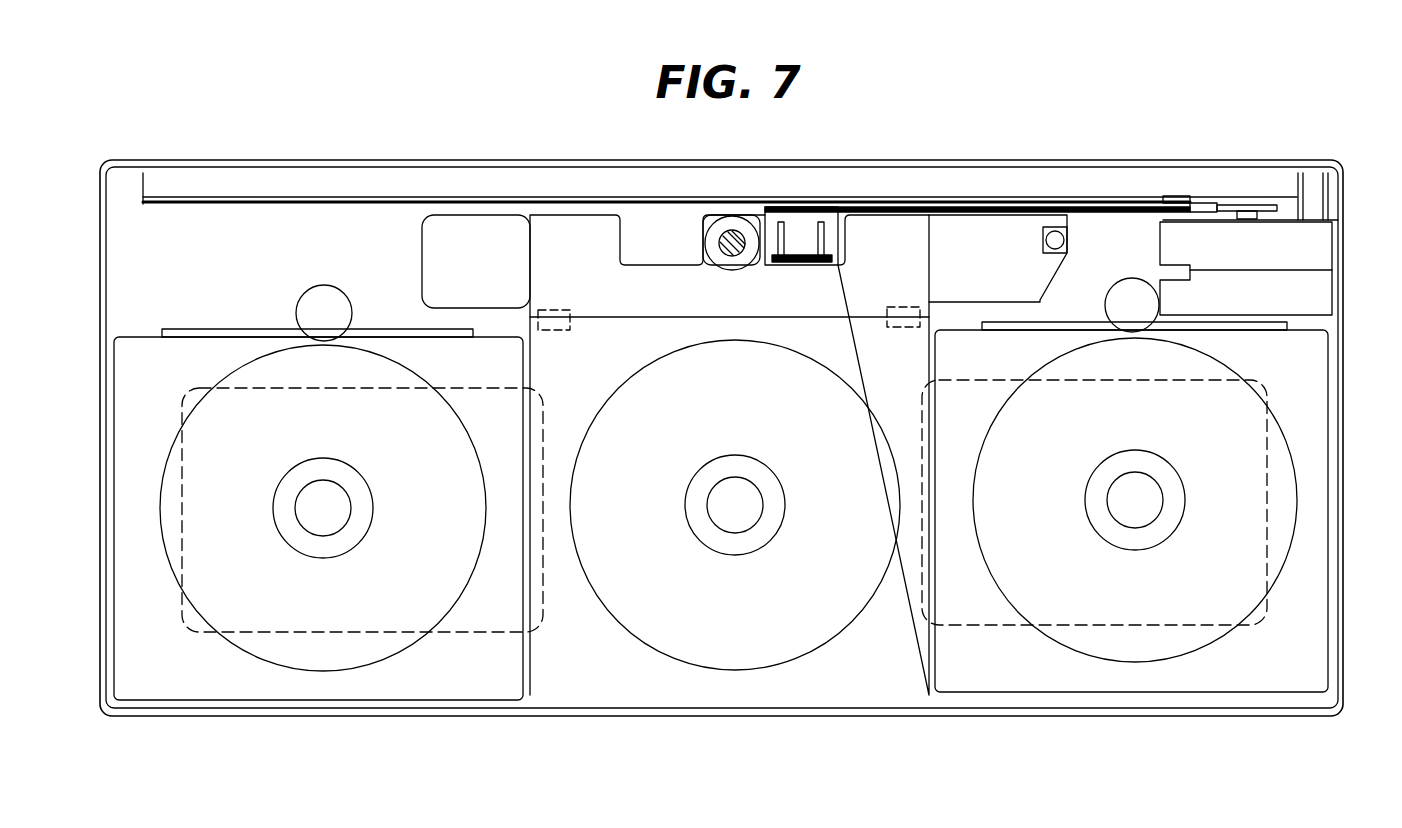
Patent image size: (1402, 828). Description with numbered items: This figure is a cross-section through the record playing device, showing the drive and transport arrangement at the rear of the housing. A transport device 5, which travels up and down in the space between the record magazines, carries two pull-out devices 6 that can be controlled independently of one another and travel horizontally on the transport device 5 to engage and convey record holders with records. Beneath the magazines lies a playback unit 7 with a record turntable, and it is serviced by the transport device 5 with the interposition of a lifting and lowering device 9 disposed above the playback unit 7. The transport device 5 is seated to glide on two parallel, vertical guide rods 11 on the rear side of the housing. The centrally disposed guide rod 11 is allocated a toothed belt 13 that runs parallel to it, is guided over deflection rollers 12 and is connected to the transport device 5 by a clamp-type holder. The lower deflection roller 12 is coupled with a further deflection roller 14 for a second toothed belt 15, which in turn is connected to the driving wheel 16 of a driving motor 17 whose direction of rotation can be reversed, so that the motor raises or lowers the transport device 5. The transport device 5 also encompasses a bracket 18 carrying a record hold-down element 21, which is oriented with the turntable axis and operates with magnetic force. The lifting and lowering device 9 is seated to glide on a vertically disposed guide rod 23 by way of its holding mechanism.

The transport device 5 is at (646, 248).
The pull-out device 6 is at (556, 310).
The playback unit 7 is at (478, 632).
The lifting and lowering device 9 is at (165, 685).
The guide rod 11 is at (727, 238).
The deflection roller 12 is at (822, 235).
The toothed belt 13 is at (775, 250).
The further deflection roller 14 is at (803, 235).
The toothed belt 15 is at (1088, 205).
The driving wheel 16 is at (1230, 205).
The driving motor 17 is at (1315, 256).
The bracket 18 is at (902, 680).
The record hold-down element 21 is at (363, 487).
The guide rod 23 is at (313, 305).